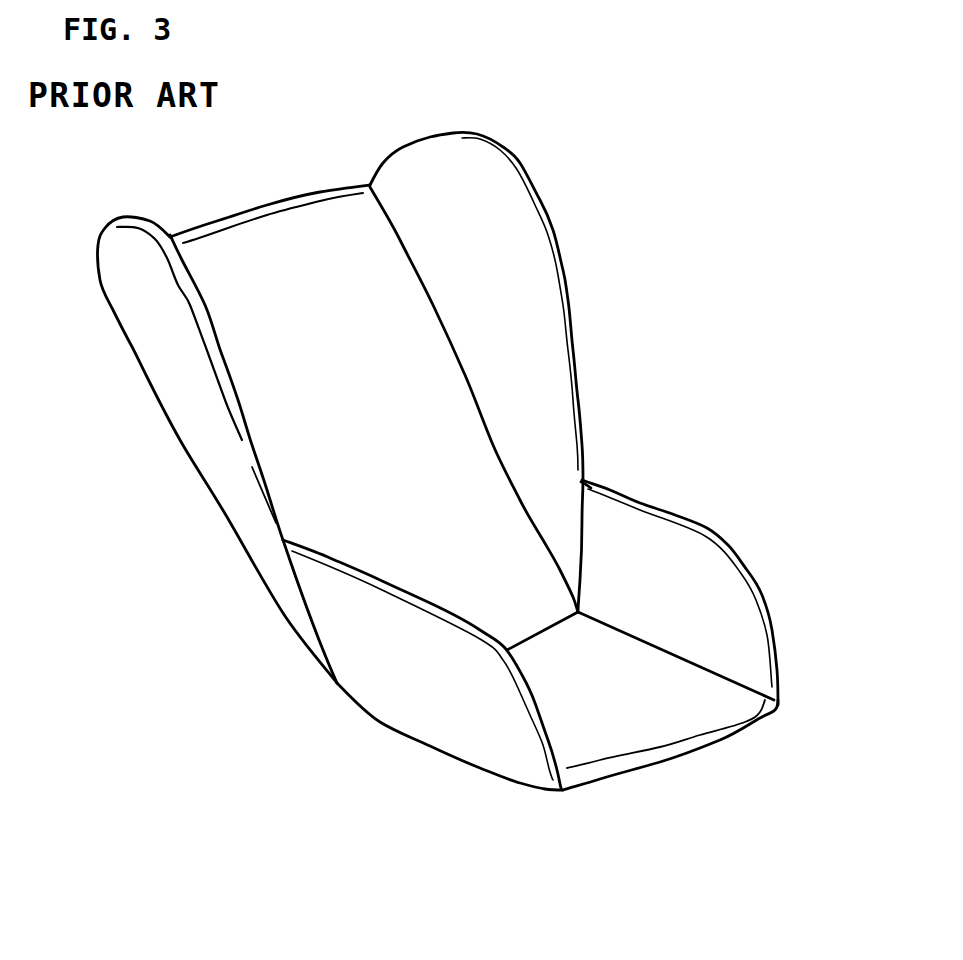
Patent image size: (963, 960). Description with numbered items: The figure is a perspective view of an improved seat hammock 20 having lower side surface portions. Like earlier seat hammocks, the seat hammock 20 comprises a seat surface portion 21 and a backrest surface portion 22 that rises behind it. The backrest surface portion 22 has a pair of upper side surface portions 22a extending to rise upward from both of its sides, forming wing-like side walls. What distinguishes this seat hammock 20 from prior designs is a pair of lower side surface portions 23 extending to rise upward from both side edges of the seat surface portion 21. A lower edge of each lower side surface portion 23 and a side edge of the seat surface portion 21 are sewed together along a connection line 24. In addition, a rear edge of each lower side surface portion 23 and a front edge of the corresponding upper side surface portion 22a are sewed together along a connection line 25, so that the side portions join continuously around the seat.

The seat hammock 20 is at (558, 143).
The seat surface portion 21 is at (700, 707).
The backrest surface portion 22 is at (357, 352).
The upper side surface portion 22a is at (197, 412).
The lower side surface portion 23 is at (422, 660).
The connection line 24 is at (690, 653).
The connection line 25 is at (303, 620).